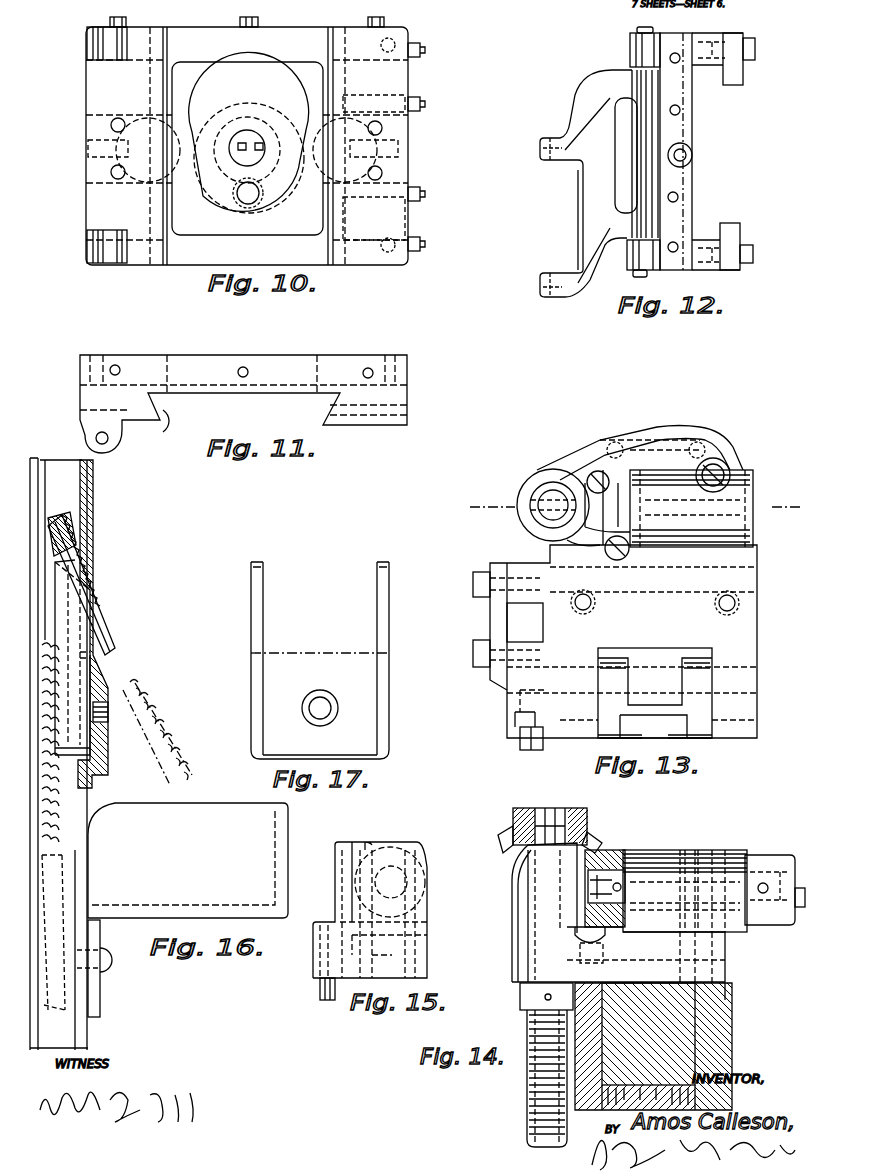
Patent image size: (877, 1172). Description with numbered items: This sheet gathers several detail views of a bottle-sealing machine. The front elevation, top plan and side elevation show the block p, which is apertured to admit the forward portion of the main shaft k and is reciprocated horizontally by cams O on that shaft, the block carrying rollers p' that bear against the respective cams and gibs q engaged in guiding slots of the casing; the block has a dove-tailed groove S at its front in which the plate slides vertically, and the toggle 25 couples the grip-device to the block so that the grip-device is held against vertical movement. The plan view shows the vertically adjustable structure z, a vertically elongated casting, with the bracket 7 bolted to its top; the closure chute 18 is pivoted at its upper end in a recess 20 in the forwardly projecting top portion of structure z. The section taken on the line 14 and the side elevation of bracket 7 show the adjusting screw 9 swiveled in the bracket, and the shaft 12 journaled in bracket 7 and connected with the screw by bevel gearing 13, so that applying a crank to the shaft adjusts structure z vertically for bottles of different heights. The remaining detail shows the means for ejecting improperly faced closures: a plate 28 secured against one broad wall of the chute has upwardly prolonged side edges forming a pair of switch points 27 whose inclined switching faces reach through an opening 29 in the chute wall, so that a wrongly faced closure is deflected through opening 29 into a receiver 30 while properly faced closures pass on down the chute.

In FIG. 10, the block p is at (258, 141).
In FIG. 12, the block p is at (685, 152).
In FIG. 11, the block p is at (243, 393).
In FIG. 10, the rollers p' is at (246, 142).
In FIG. 10, the main shaft k is at (250, 140).
In FIG. 10, the cams O is at (237, 222).
In FIG. 12, the gibs q is at (732, 86).
In FIG. 12, the toggle 25 is at (584, 207).
In FIG. 11, the dove-tailed groove S is at (168, 428).
In FIG. 14, the dove-tailed groove S is at (648, 1044).
In FIG. 13, the structure z is at (753, 647).
In FIG. 14, the structure z is at (717, 1047).
In FIG. 13, the adjusting screw 9 is at (550, 520).
In FIG. 14, the adjusting screw 9 is at (527, 1095).
In FIG. 13, the bracket 7 is at (573, 462).
In FIG. 14, the bracket 7 is at (725, 963).
In FIG. 15, the bracket 7 is at (423, 935).
In FIG. 13, the recess 20 is at (658, 650).
In FIG. 13, the closure chute 18 is at (607, 715).
In FIG. 16, the closure chute 18 is at (93, 488).
In FIG. 13, the section line 14 is at (490, 502).
In FIG. 14, the bevel gearing 13 is at (592, 848).
In FIG. 14, the shaft 12 is at (624, 855).
In FIG. 16, the opening 29 is at (95, 576).
In FIG. 16, the plate 28 is at (65, 615).
In FIG. 17, the plate 28 is at (309, 660).
In FIG. 16, the switch points 27 is at (102, 647).
In FIG. 17, the switch points 27 is at (385, 598).
In FIG. 16, the receiver 30 is at (182, 910).